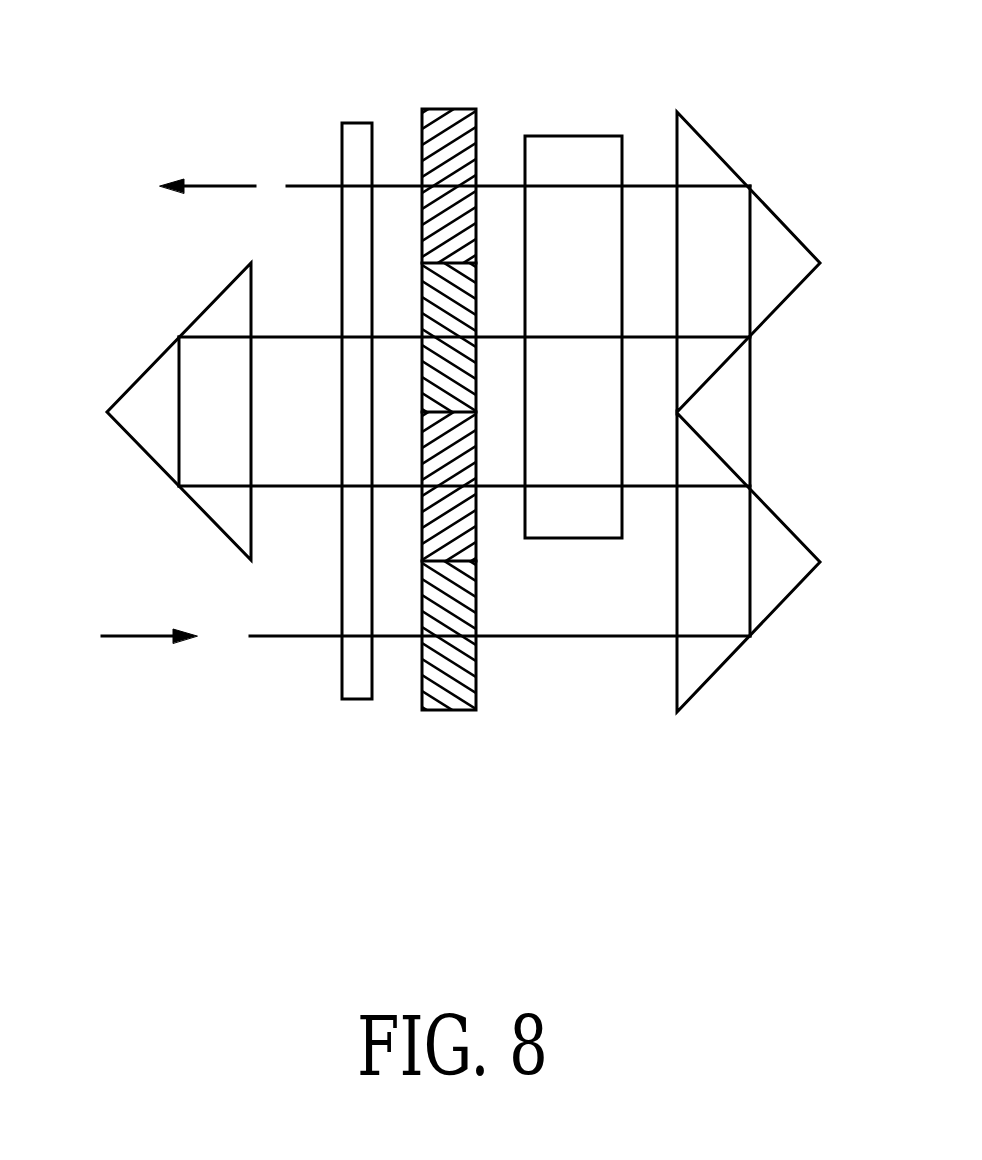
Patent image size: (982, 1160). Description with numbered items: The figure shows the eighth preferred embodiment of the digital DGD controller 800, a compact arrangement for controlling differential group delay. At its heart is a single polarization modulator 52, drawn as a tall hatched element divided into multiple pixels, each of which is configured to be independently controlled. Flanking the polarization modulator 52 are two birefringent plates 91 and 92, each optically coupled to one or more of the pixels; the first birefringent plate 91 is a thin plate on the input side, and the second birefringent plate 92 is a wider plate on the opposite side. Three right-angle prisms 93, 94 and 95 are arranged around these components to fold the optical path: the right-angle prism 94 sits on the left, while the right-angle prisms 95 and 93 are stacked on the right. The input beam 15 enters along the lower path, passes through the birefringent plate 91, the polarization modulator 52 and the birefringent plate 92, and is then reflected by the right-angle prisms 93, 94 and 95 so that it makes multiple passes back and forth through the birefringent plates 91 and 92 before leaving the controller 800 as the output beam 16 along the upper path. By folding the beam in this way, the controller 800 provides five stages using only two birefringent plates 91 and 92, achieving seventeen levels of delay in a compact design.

The digital DGD controller 800 is at (478, 949).
The input beam 15 is at (133, 633).
The output light beam 16 is at (213, 184).
The birefringent plate 91 is at (354, 123).
The polarization modulator 52 is at (455, 109).
The birefringent plate 92 is at (572, 136).
The right-angle prism 93 is at (793, 528).
The right-angle prism 94 is at (128, 387).
The right-angle prism 95 is at (793, 228).